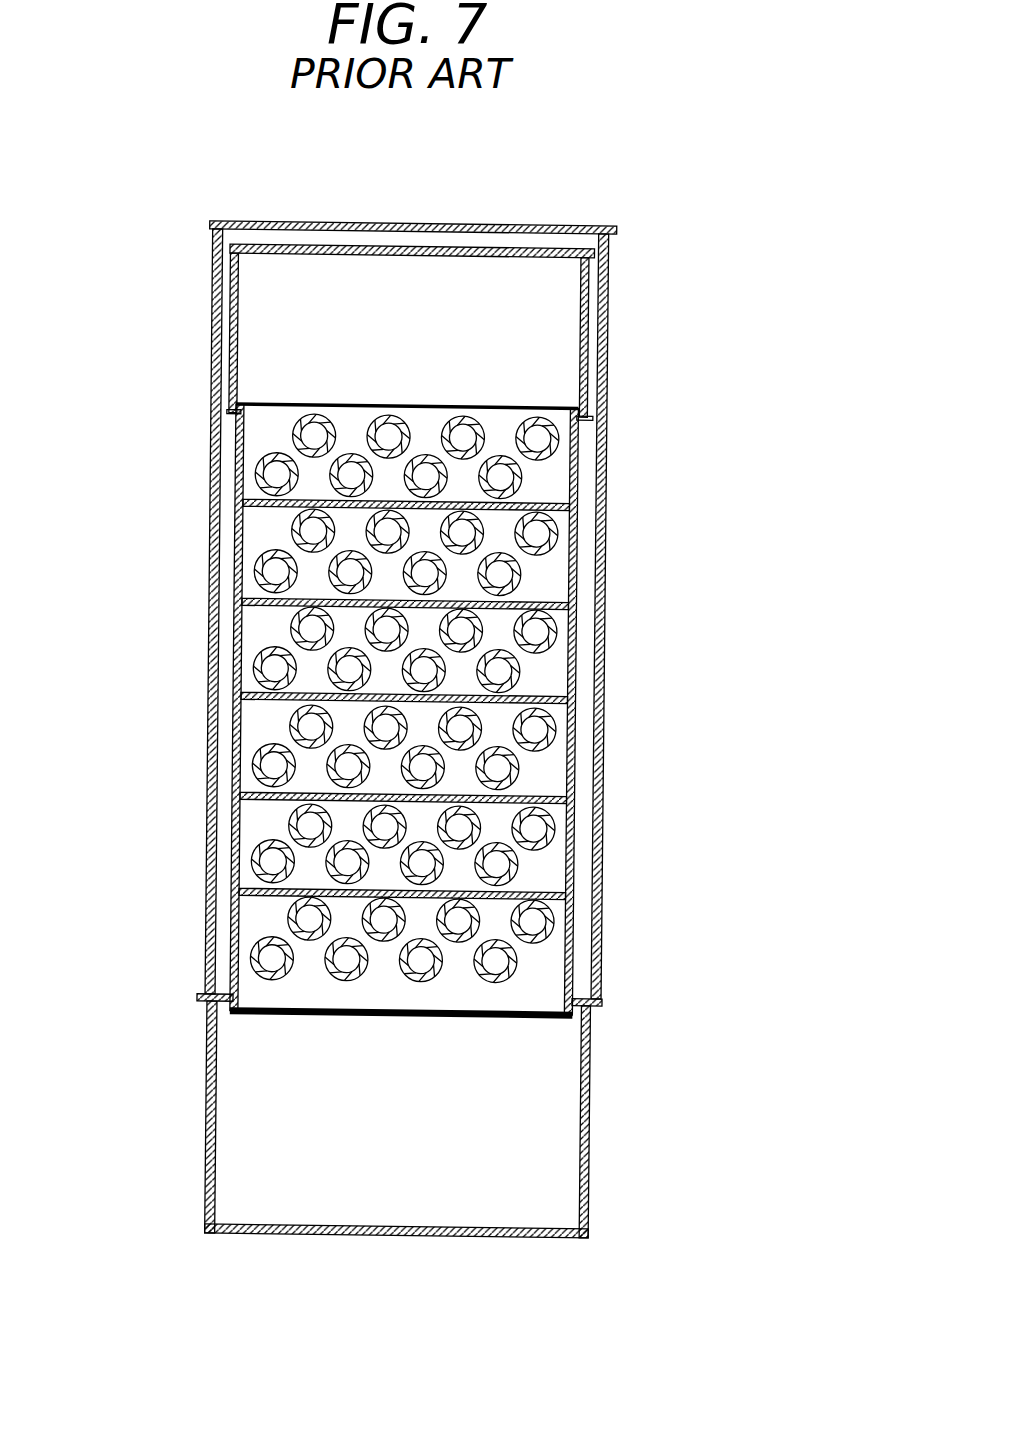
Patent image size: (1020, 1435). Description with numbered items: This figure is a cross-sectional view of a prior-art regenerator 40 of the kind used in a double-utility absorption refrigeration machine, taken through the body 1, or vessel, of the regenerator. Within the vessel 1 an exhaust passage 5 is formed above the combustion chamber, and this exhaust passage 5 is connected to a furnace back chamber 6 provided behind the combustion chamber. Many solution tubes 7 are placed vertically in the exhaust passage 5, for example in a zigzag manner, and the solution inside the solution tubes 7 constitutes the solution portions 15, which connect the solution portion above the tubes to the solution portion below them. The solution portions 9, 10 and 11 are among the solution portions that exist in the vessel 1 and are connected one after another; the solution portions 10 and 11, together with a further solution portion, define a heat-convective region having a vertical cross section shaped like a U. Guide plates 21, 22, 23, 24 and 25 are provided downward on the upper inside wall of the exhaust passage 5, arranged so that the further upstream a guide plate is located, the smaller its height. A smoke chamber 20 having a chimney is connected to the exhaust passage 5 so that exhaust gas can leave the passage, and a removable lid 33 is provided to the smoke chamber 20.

The body 1 is at (602, 435).
The exhaust passage 5 is at (420, 417).
The furnace back chamber 6 is at (319, 258).
The solution tubes 7 is at (521, 476).
The solution portion 9 is at (513, 239).
The solution portion 10 is at (224, 640).
The solution portion 11 is at (582, 658).
The solution portions 15 is at (254, 437).
The smoke chamber 20 is at (254, 1118).
The guide plate 21 is at (555, 501).
The guide plate 22 is at (559, 595).
The guide plate 23 is at (562, 683).
The guide plate 24 is at (564, 776).
The guide plate 25 is at (558, 866).
The lid 33 is at (452, 1232).
The regenerator 40 is at (652, 327).